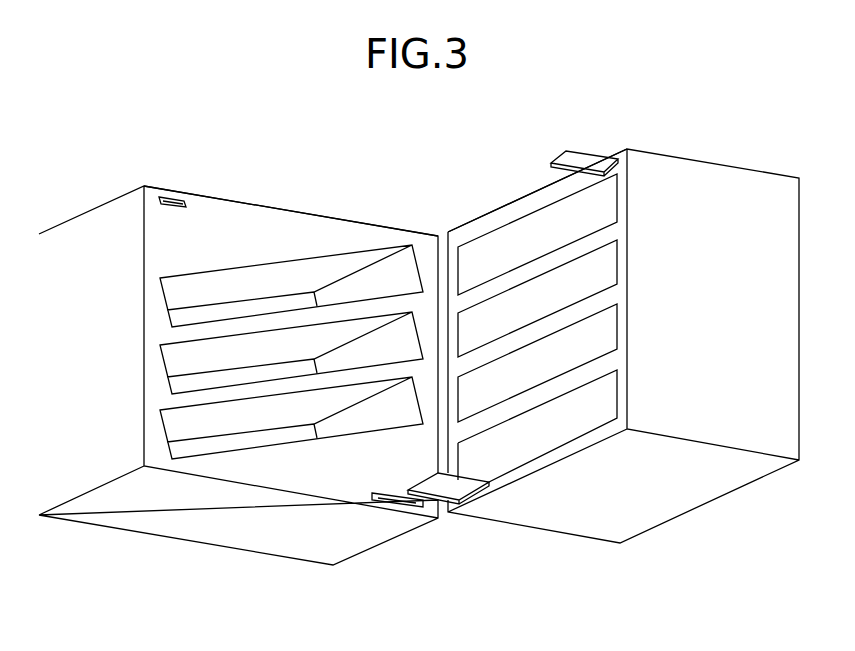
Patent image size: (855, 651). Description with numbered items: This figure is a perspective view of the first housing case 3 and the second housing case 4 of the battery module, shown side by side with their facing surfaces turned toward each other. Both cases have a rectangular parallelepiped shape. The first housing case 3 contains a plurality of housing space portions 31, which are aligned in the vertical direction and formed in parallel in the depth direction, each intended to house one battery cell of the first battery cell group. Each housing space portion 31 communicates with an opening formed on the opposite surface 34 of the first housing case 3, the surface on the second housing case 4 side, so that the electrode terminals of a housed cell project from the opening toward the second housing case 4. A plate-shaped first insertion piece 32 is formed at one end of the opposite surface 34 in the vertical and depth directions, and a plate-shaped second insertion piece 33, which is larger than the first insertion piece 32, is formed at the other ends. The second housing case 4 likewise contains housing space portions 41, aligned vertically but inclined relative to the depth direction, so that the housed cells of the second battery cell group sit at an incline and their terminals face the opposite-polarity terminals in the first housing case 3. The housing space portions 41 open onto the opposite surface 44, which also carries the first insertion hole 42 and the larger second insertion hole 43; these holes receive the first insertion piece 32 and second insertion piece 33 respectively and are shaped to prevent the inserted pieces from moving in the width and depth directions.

The first housing case 3 is at (603, 341).
The second housing case 4 is at (238, 369).
The housing space portions 31 is at (528, 457).
The first insertion piece 32 is at (580, 153).
The second insertion piece 33 is at (440, 492).
The opposite surface 34 is at (539, 200).
The housing space portions 41 is at (290, 410).
The first insertion hole 42 is at (172, 197).
The second insertion hole 43 is at (396, 508).
The opposite surface 44 is at (230, 222).